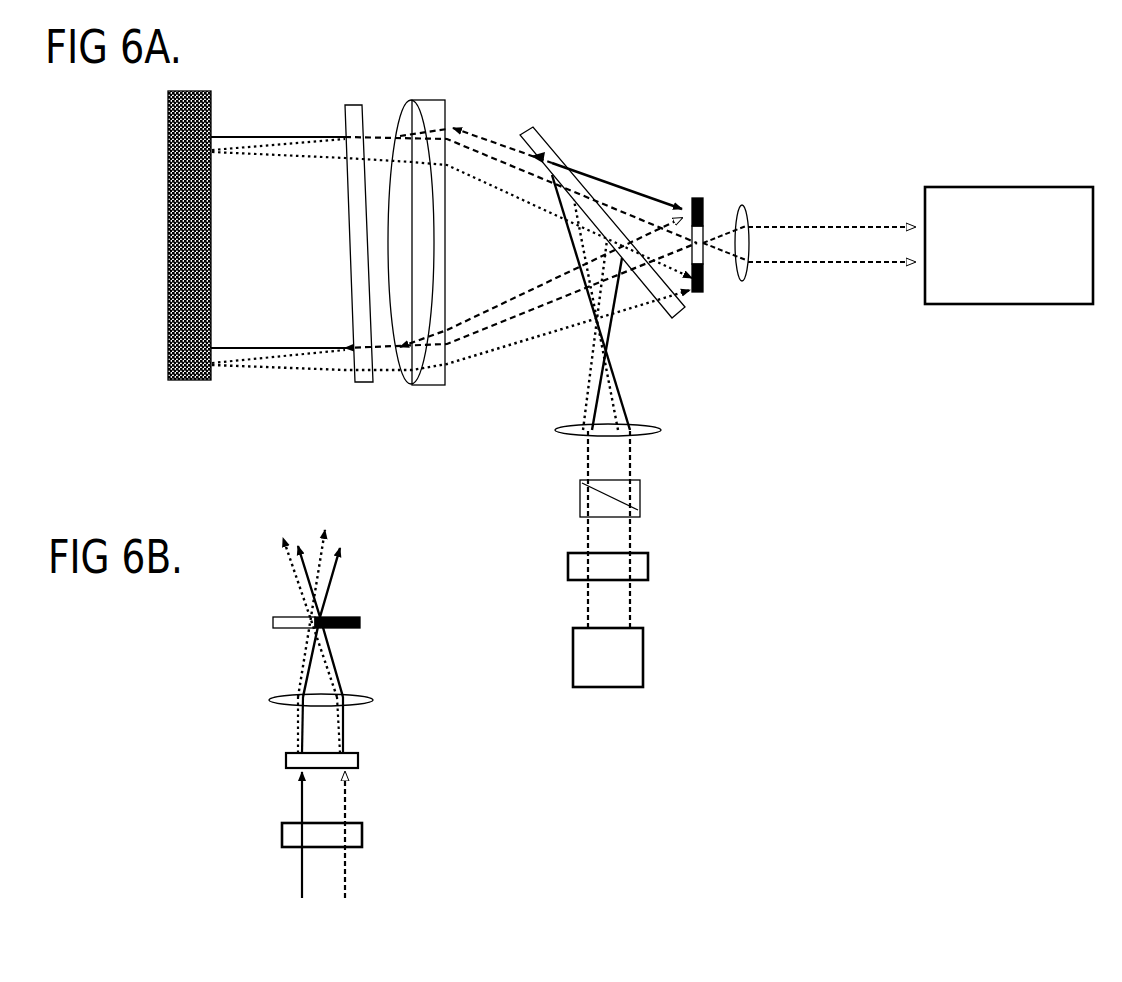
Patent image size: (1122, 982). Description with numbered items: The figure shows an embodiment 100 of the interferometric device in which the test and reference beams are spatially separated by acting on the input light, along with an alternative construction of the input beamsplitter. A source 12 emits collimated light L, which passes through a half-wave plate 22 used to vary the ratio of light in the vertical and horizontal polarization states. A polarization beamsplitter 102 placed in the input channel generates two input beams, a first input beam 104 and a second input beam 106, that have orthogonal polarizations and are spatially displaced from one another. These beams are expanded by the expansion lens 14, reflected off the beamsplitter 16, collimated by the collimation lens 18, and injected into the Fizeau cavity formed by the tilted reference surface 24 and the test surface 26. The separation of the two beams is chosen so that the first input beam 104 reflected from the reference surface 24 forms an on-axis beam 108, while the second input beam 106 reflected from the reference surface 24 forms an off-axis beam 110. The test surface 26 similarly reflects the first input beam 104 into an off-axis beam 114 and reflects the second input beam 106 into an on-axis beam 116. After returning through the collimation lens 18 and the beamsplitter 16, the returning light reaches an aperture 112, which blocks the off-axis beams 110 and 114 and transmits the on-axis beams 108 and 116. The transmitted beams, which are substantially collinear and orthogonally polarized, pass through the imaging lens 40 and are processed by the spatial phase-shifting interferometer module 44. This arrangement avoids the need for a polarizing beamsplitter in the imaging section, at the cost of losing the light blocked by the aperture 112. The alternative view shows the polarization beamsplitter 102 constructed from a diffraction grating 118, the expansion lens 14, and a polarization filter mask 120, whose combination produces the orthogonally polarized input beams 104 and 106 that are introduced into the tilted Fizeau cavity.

In FIG. 6A, the embodiment 100 is at (688, 60).
In FIG. 6A, the test surface 26 is at (211, 213).
In FIG. 6A, the reference surface 24 is at (371, 220).
In FIG. 6A, the collimation lens 18 is at (440, 221).
In FIG. 6A, the beamsplitter 16 is at (602, 201).
In FIG. 6A, the off-axis reflected beam 110 is at (567, 168).
In FIG. 6A, the aperture 112 is at (722, 220).
In FIG. 6A, the imaging lens 40 is at (760, 226).
In FIG. 6A, the on-axis reference beam 108 is at (831, 207).
In FIG. 6A, the on-axis test beam 116 is at (831, 286).
In FIG. 6A, the spatial phase-shifting interferometer module 44 is at (1009, 269).
In FIG. 6A, the off-axis test beam 114 is at (462, 330).
In FIG. 6A, the first input beam 104 is at (582, 315).
In FIG. 6B, the first input beam 104 is at (289, 613).
In FIG. 6A, the second input beam 106 is at (607, 302).
In FIG. 6B, the second input beam 106 is at (344, 621).
In FIG. 6A, the expansion lens 14 is at (625, 449).
In FIG. 6B, the expansion lens 14 is at (339, 720).
In FIG. 6A, the polarization beamsplitter 102 is at (640, 507).
In FIG. 6A, the half-wave plate 22 is at (631, 583).
In FIG. 6B, the half-wave plate 22 is at (346, 847).
In FIG. 6A, the source 12 is at (631, 657).
In FIG. 6A, the collimated light L is at (563, 588).
In FIG. 6B, the collimated light L is at (279, 868).
In FIG. 6B, the polarization filter mask 120 is at (346, 645).
In FIG. 6B, the diffraction grating 118 is at (350, 778).